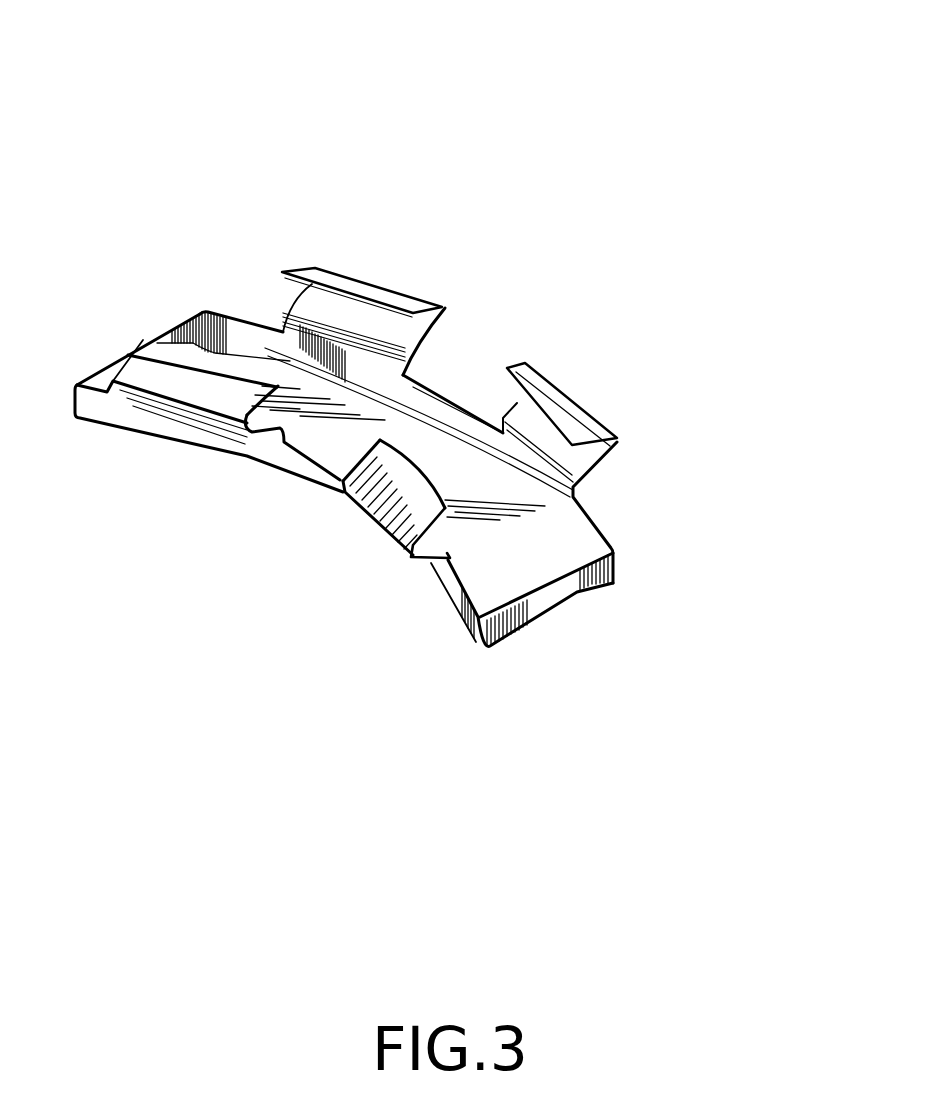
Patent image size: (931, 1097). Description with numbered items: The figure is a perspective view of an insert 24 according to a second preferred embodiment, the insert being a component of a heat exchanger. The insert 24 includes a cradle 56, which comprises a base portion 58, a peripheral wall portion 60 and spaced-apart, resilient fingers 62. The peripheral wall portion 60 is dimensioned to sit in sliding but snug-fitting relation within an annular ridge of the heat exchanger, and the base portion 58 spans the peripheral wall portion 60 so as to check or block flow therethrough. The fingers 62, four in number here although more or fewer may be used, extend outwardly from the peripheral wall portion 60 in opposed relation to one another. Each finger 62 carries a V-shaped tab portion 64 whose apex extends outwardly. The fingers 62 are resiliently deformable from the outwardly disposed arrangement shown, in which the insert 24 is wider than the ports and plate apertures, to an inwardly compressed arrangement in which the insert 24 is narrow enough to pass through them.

The insert 24 is at (227, 118).
The cradle 56 is at (677, 275).
The base portion 58 is at (557, 549).
The peripheral wall portion 60 is at (570, 596).
The resilient fingers 62 is at (442, 312).
The V-shaped tab portion 64 is at (147, 370).